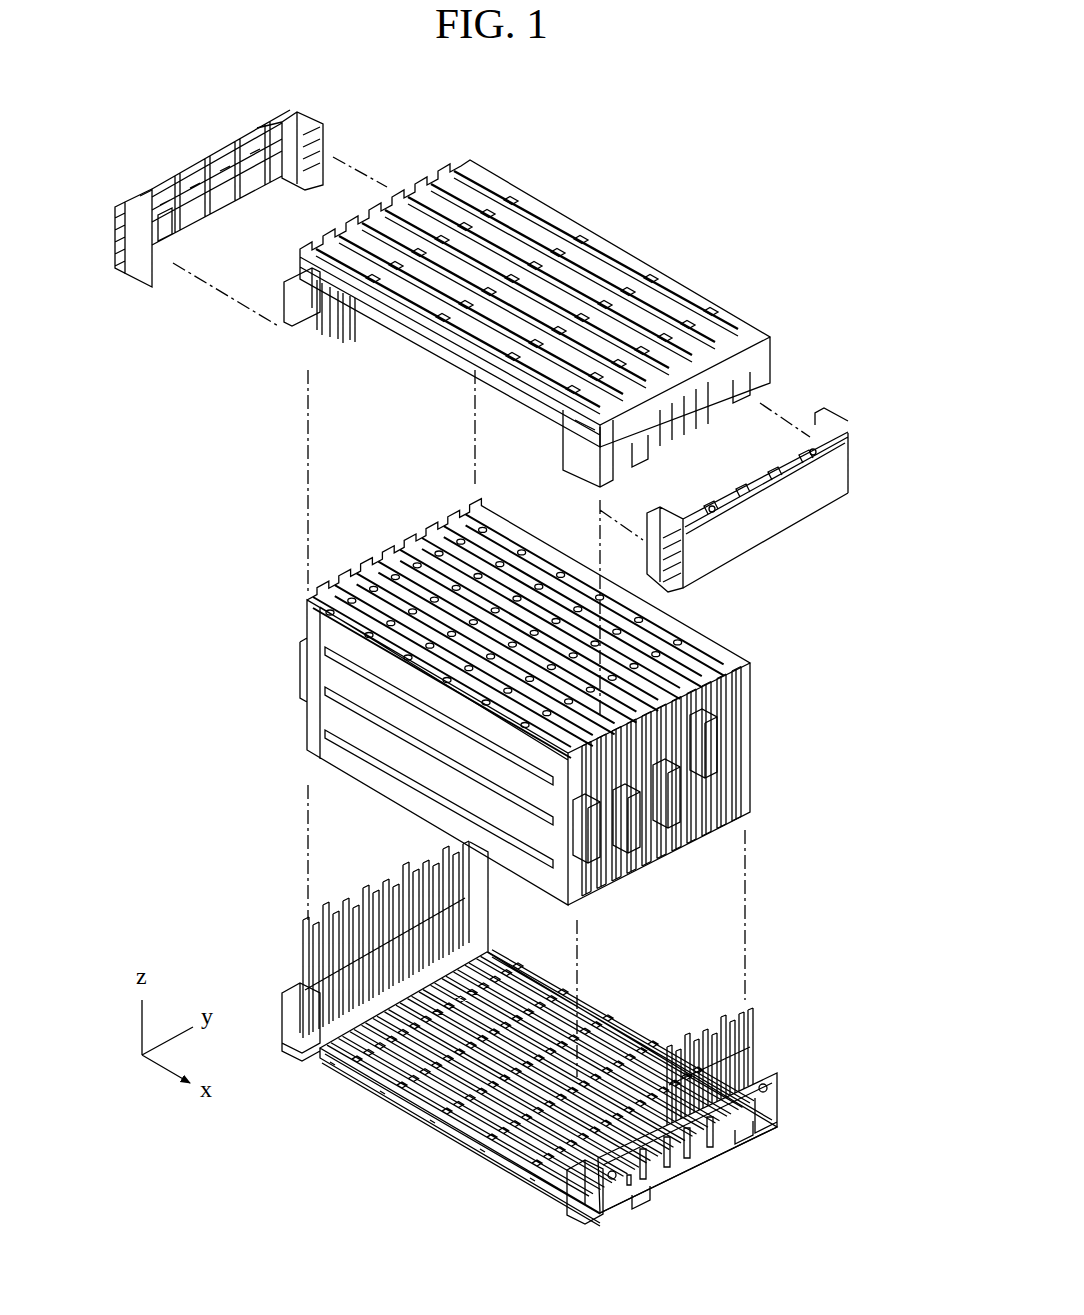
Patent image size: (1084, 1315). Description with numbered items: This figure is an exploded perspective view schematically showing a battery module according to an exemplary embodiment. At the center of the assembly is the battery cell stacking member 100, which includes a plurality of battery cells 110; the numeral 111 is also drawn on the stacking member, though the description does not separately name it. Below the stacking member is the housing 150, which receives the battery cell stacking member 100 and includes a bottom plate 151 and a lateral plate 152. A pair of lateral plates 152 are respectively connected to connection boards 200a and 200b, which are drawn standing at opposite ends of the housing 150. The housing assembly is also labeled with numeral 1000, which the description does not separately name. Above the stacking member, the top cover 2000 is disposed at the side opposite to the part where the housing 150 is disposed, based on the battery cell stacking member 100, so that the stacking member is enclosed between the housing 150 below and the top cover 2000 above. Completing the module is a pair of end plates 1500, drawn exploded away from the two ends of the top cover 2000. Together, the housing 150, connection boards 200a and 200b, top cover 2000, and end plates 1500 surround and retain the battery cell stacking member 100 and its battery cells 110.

The end plates 1500 is at (333, 121).
The top cover 2000 is at (668, 232).
The battery cell stacking member 100 is at (526, 694).
The battery cells 110 is at (702, 642).
The cell tab 111 is at (694, 745).
The connection board 200b is at (338, 892).
The lower frame 1000 is at (535, 1024).
The connection board 200a is at (770, 1021).
The housing 150 is at (364, 1105).
The bottom plate 151 is at (456, 1128).
The lateral plate 152 is at (700, 1150).